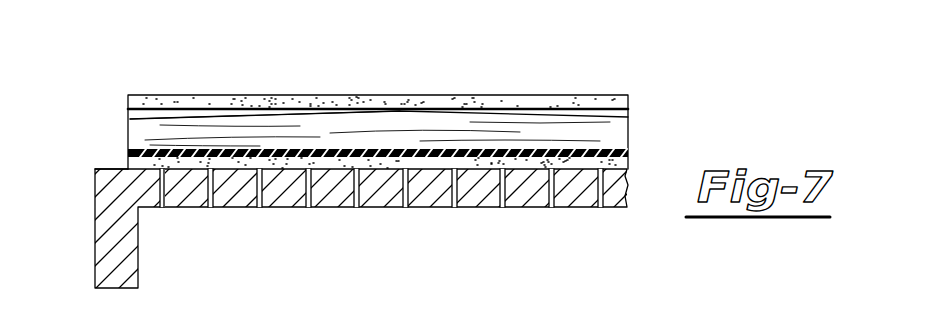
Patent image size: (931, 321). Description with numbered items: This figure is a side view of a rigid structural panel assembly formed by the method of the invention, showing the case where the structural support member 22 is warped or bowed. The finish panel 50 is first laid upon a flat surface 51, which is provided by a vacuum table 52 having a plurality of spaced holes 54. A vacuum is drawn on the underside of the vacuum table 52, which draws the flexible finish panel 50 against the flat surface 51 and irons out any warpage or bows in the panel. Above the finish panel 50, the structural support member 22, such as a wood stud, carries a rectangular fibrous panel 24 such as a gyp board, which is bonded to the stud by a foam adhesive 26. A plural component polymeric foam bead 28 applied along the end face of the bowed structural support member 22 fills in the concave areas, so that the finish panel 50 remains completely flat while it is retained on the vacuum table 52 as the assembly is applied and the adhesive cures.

The structural support member 22 is at (460, 133).
The rectangular fibrous panel 24 is at (303, 107).
The foam adhesive 26 is at (155, 117).
The foam bead 28 is at (386, 135).
The finish panel 50 is at (547, 162).
The flat surface 51 is at (112, 168).
The vacuum table 52 is at (117, 240).
The spaced holes 54 is at (263, 178).